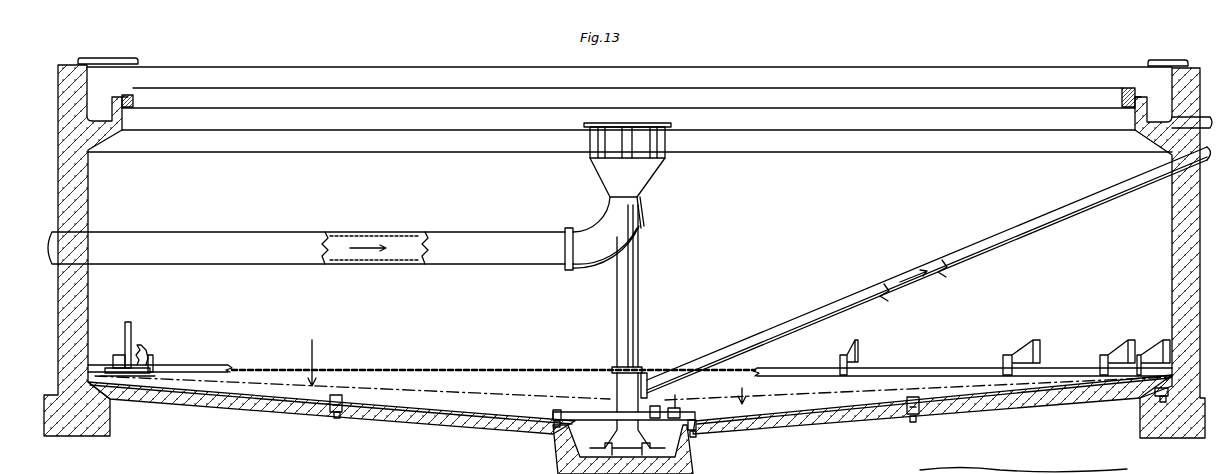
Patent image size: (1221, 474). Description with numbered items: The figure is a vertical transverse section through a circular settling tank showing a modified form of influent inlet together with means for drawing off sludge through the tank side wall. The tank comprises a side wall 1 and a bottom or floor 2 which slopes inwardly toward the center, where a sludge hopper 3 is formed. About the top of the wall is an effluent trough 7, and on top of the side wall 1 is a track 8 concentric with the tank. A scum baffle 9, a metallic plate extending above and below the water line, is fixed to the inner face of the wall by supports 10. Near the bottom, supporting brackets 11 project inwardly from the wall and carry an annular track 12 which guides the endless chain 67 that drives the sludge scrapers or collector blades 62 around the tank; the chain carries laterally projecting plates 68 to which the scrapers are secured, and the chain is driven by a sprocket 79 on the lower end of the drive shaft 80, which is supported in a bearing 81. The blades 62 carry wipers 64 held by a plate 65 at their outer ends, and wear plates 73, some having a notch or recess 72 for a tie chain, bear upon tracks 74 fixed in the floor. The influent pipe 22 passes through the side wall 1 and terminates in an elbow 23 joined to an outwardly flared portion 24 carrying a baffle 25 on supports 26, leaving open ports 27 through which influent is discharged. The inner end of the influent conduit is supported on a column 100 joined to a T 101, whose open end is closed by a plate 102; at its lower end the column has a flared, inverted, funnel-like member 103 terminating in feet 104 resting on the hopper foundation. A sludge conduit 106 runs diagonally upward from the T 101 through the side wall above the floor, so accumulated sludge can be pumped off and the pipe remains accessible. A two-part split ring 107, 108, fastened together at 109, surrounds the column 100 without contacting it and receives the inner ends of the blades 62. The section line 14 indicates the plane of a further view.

The side wall 1 is at (80, 294).
The bottom or floor 2 is at (252, 405).
The sludge hopper 3 is at (560, 440).
The effluent trough 7 is at (100, 107).
The track 8 is at (105, 58).
The scum baffle 9 is at (135, 97).
The supports 10 is at (128, 110).
The supporting brackets 11 is at (150, 360).
The annular track 12 is at (193, 365).
The section line 14 is at (633, 363).
The influent pipe 22 is at (340, 232).
The elbow 23 is at (648, 212).
The outwardly flared portion 24 is at (605, 184).
The baffle 25 is at (600, 123).
The supports 26 is at (597, 143).
The open ports 27 is at (612, 150).
The sludge scrapers or collector blades 62 is at (441, 426).
The wipers 64 is at (1164, 404).
The plate 65 is at (1160, 396).
The endless chain 67 is at (468, 368).
The laterally projecting plates 68 is at (118, 356).
The notch or recess 72 is at (338, 394).
The wear plate 73 is at (330, 406).
The track 74 is at (337, 420).
The sprocket 79 is at (142, 374).
The drive shaft 80 is at (132, 326).
The bearing 81 is at (148, 350).
The column 100 is at (640, 300).
The T 101 is at (616, 384).
The plate or closing member 102 is at (632, 360).
The flared inverted funnel-like member 103 is at (616, 445).
The feet 104 is at (645, 450).
The sludge conduit 106 is at (785, 318).
The split ring part 107 is at (676, 408).
The split ring part 108 is at (598, 412).
The fastening 109 is at (660, 410).